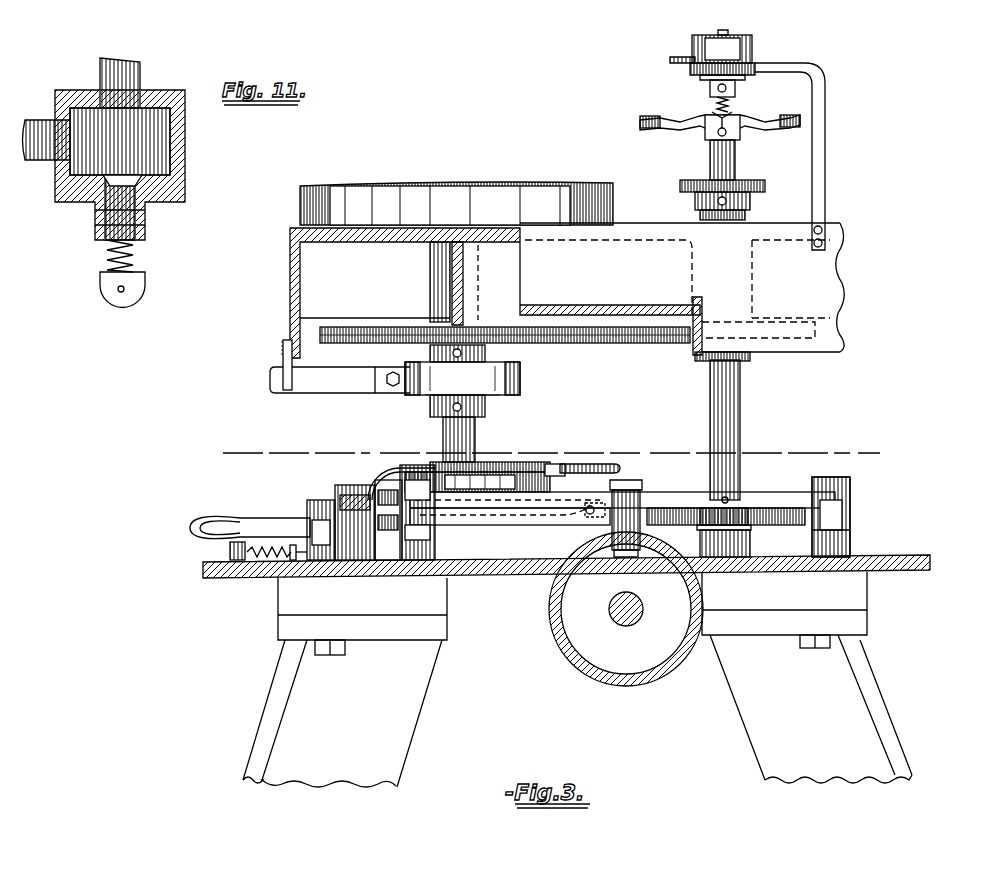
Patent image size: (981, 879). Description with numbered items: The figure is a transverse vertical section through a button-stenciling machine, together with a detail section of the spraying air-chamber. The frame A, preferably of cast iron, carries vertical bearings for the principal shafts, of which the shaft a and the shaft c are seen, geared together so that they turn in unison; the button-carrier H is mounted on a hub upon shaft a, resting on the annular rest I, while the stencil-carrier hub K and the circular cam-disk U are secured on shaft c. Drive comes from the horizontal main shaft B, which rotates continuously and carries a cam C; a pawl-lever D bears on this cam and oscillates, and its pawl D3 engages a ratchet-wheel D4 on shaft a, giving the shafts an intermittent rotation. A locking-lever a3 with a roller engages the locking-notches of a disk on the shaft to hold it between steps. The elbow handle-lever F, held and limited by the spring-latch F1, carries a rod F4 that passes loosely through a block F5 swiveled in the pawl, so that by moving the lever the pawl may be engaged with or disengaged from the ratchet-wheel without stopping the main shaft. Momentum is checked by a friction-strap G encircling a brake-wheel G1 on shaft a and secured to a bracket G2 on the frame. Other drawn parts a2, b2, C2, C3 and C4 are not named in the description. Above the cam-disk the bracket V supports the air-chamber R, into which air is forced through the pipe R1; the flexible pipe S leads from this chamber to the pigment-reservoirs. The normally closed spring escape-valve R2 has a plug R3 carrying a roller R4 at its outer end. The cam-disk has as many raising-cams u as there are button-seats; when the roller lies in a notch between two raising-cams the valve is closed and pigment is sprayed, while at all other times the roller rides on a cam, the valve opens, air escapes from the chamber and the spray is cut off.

In FIG. 11, the air-chamber R is at (97, 116).
In FIG. 3, the air-chamber R is at (722, 57).
In FIG. 11, the pipe R1 is at (150, 92).
In FIG. 11, the spring escape-valve R2 is at (123, 166).
In FIG. 3, the spring escape-valve R2 is at (760, 38).
In FIG. 11, the plug R3 is at (125, 215).
In FIG. 3, the plug R3 is at (732, 102).
In FIG. 11, the roller R4 is at (128, 297).
In FIG. 3, the roller R4 is at (703, 138).
In FIG. 3, the flexible pipe S is at (668, 60).
In FIG. 3, the raising-cam u is at (702, 118).
In FIG. 3, the circular cam-disk U is at (720, 133).
In FIG. 3, the stencil-carrier hub K is at (722, 189).
In FIG. 3, the bracket V is at (825, 175).
In FIG. 3, the annular flange or rest I is at (456, 192).
In FIG. 3, the friction-strap G is at (520, 380).
In FIG. 3, the brake-wheel G1 is at (487, 356).
In FIG. 3, the bracket G2 is at (283, 357).
In FIG. 3, the gear a2 is at (585, 343).
In FIG. 3, the gear b2 is at (645, 343).
In FIG. 3, the shaft c is at (740, 410).
In FIG. 3, the shaft a is at (476, 424).
In FIG. 3, the pawl-lever D is at (405, 470).
In FIG. 3, the pawl D3 is at (590, 466).
In FIG. 3, the ratchet-wheel D4 is at (515, 478).
In FIG. 3, the elbow handle-lever F is at (278, 530).
In FIG. 3, the spring-latch F1 is at (228, 550).
In FIG. 3, the rod F4 is at (360, 478).
In FIG. 3, the block F5 is at (555, 466).
In FIG. 3, the locking-lever a3 is at (388, 520).
In FIG. 3, the cam C is at (570, 637).
In FIG. 3, the rack C2 is at (726, 526).
In FIG. 3, the slide bar C3 is at (760, 494).
In FIG. 3, the pinion block C4 is at (724, 532).
In FIG. 3, the horizontal main shaft B is at (644, 606).
In FIG. 3, the frame A is at (900, 562).
In FIG. 3, the button-carrier H is at (539, 454).